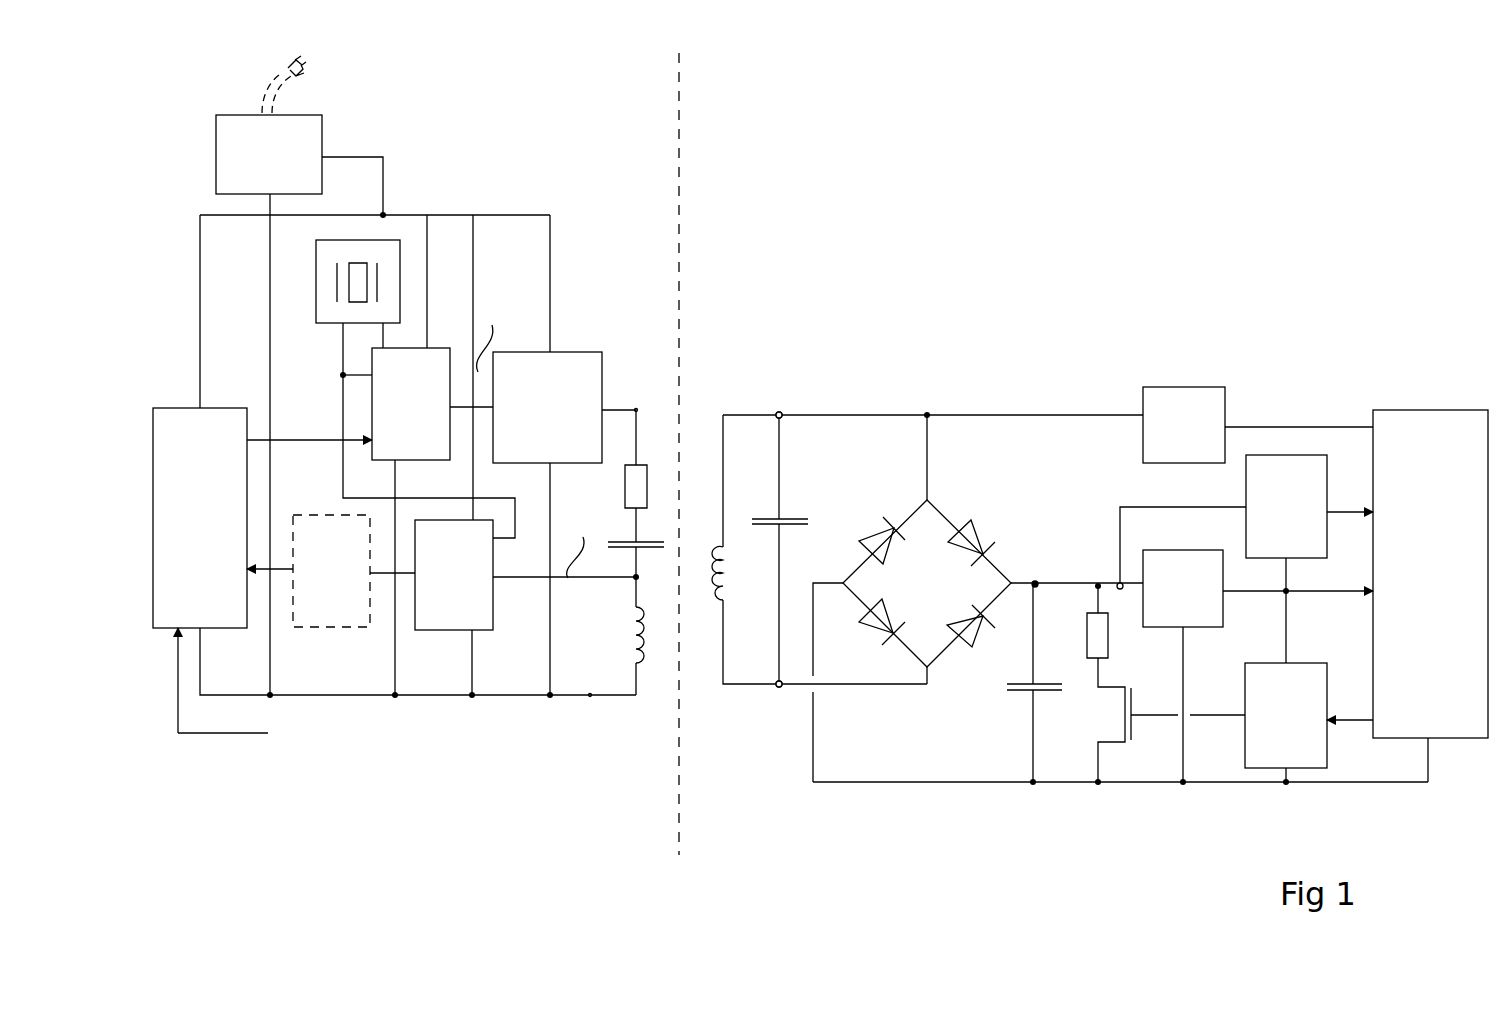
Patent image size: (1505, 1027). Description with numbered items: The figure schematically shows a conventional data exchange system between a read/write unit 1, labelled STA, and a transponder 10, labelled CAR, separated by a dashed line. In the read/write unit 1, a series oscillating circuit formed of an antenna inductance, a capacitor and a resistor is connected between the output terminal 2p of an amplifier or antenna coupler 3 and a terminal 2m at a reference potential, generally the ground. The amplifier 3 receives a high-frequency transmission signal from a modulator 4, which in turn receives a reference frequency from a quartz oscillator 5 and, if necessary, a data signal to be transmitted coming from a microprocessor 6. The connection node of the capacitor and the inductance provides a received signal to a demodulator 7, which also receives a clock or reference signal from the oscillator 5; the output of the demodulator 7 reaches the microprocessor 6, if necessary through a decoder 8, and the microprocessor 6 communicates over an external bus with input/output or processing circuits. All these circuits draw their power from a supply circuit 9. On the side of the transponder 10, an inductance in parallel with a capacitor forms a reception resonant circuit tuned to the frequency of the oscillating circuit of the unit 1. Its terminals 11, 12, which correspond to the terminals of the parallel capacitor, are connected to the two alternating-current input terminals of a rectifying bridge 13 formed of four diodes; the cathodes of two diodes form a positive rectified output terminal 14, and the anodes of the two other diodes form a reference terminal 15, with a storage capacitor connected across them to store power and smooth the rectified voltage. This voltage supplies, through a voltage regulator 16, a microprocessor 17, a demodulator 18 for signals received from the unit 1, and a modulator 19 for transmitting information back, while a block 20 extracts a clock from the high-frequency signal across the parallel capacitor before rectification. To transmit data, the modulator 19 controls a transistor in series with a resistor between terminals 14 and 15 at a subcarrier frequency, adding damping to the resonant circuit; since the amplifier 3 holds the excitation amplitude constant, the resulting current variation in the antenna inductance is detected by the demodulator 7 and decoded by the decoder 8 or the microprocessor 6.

The read/write unit 1 is at (554, 120).
The supply circuit 9 is at (322, 120).
The quartz oscillator 5 is at (314, 323).
The microprocessor 6 is at (222, 408).
The modulator 4 is at (440, 348).
The amplifier or antenna coupler 3 is at (585, 352).
The output terminal 2p is at (624, 408).
The terminal at a reference potential 2m is at (590, 700).
The decoder 8 is at (322, 627).
The demodulator 7 is at (425, 630).
The transponder 10 is at (1090, 143).
The terminal of resonant circuit 11 is at (781, 413).
The terminal of resonant circuit 12 is at (778, 689).
The rectifying bridge 13 is at (936, 591).
The positive rectified output terminal 14 is at (1035, 582).
The reference terminal 15 is at (988, 786).
The voltage regulator 16 is at (1223, 614).
The microprocessor 17 is at (1408, 410).
The demodulator 18 is at (1327, 479).
The modulator 19 is at (1308, 663).
The clock extraction block 20 is at (1197, 387).